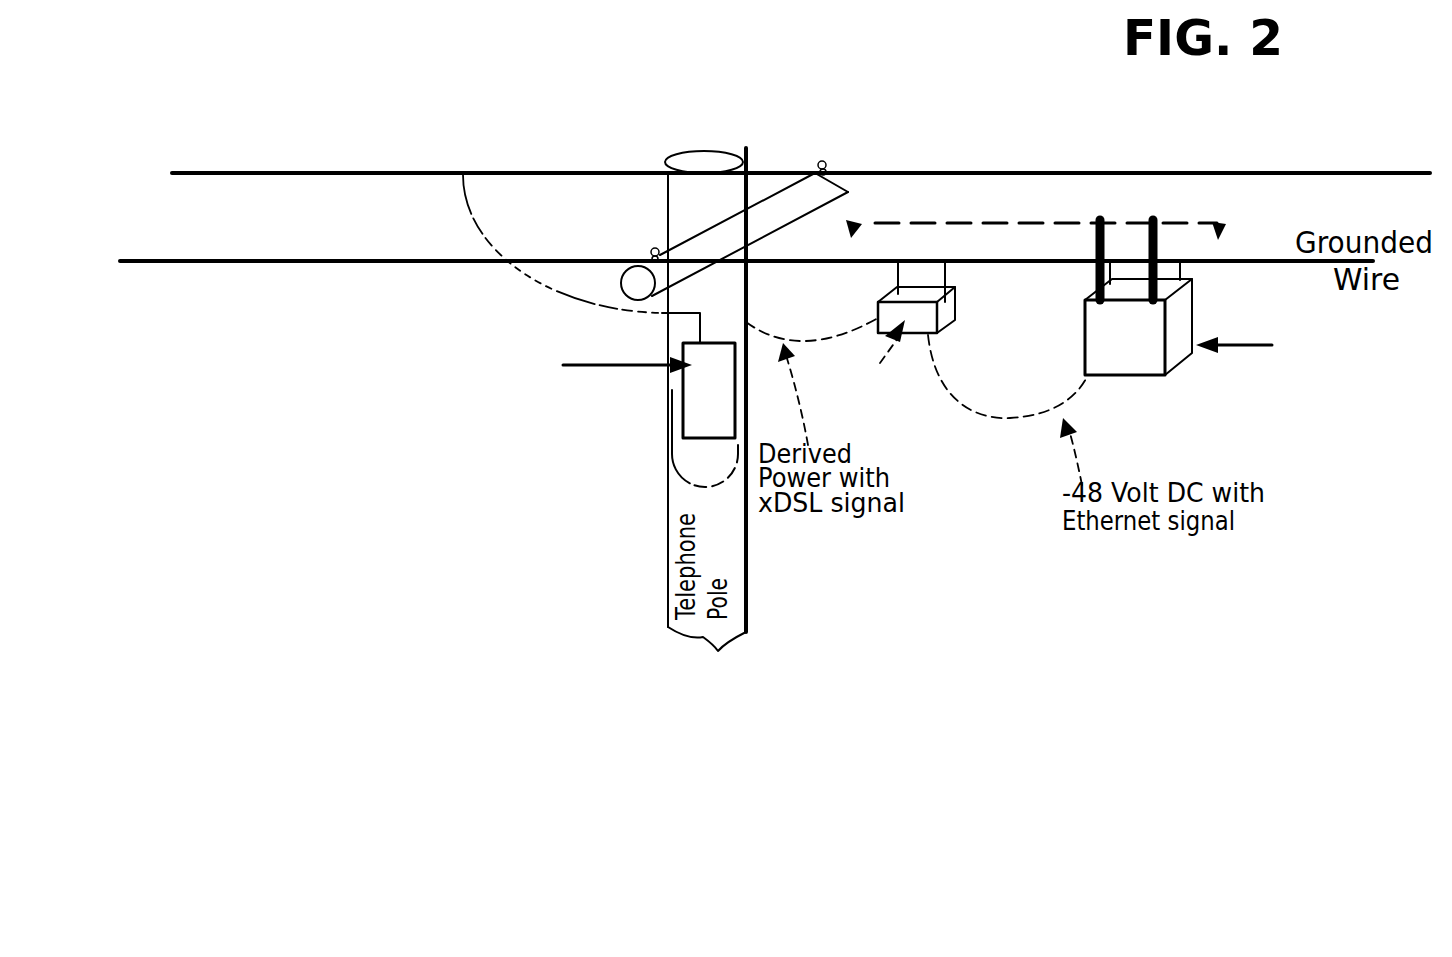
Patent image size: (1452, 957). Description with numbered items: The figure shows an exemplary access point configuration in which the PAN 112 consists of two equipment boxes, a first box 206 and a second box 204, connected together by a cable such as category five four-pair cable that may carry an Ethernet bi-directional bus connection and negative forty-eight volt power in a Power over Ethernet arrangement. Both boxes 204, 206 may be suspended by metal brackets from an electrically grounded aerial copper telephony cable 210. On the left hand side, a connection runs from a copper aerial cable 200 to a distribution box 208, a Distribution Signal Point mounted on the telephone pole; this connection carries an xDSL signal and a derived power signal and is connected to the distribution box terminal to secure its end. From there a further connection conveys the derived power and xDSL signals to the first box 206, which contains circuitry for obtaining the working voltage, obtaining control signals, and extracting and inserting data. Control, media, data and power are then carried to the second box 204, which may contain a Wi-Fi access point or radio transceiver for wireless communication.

The copper aerial cable 200 is at (801, 143).
The electrically grounded aerial copper telephony cable 210 is at (746, 230).
The distribution box 208 is at (593, 400).
The first box 206 is at (918, 338).
The second box 204 is at (1238, 327).
The PAN 112 is at (1057, 233).